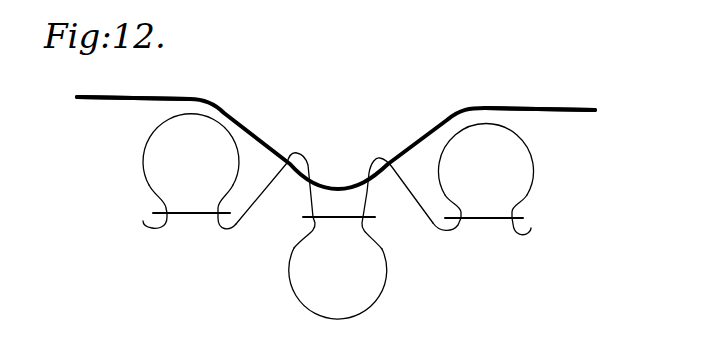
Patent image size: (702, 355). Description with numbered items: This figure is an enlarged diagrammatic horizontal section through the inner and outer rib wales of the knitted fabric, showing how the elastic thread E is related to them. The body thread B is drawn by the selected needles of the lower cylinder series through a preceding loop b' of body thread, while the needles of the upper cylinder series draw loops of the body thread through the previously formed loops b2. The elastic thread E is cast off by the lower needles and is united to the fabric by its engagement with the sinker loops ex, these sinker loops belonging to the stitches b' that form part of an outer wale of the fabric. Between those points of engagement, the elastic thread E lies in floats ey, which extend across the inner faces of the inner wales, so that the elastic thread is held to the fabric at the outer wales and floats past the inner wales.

The elastic thread E is at (255, 131).
The floats ey is at (132, 92).
The sinker loops ex is at (295, 158).
The previously formed loops b2 is at (546, 162).
The preceding loop of body thread b' is at (343, 278).
The body thread B is at (145, 229).